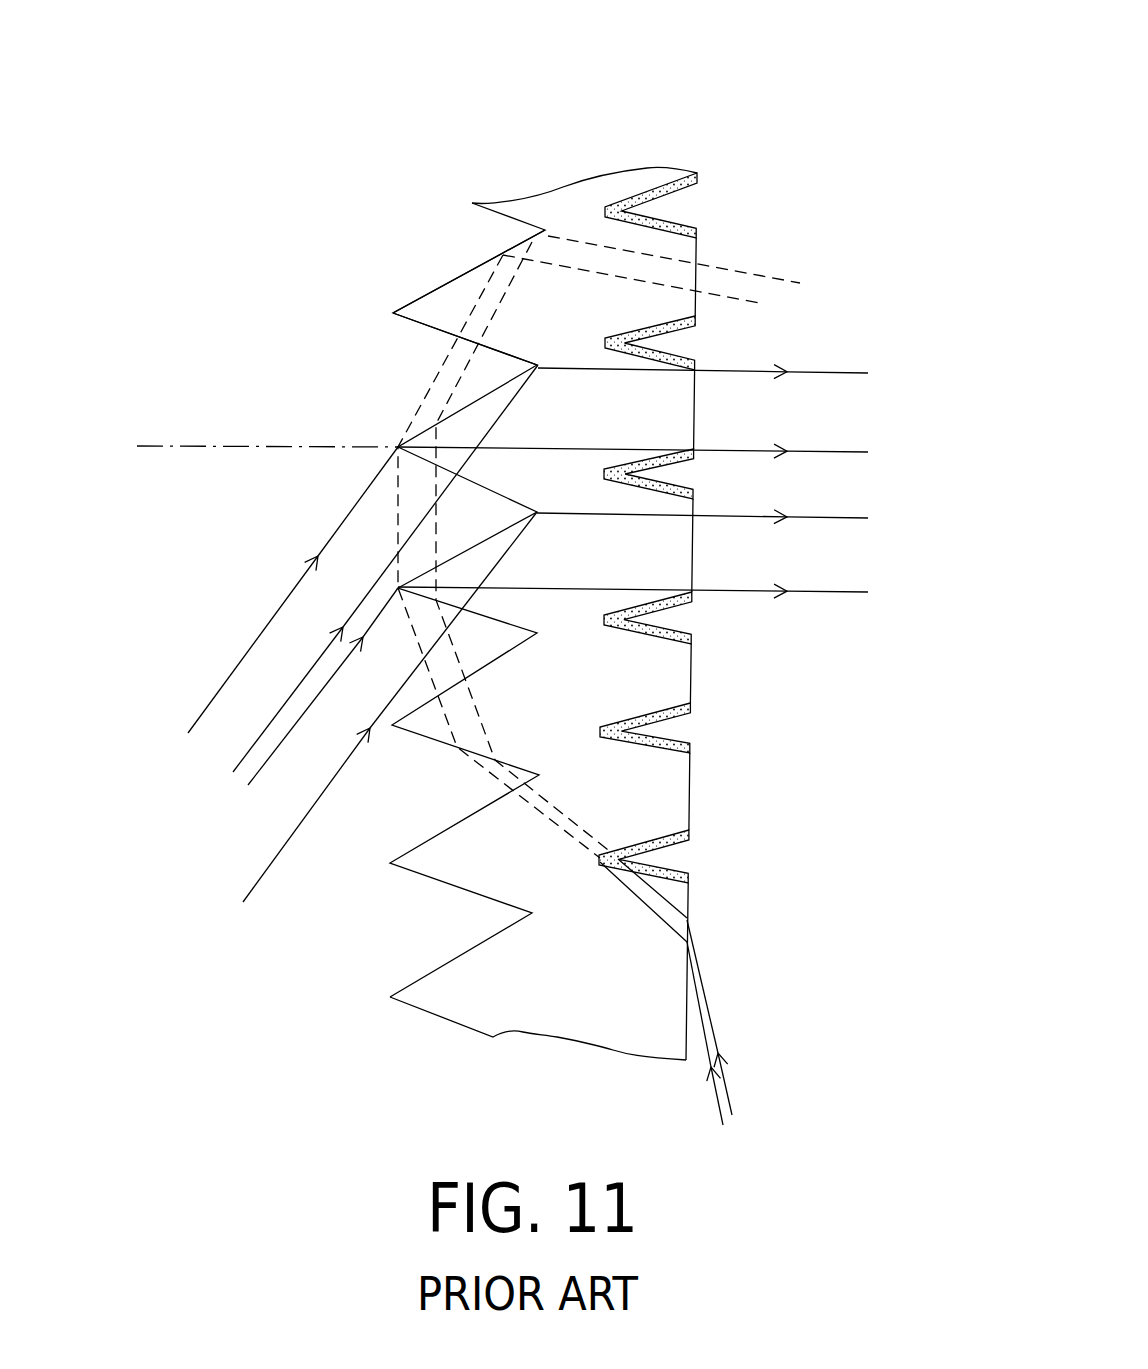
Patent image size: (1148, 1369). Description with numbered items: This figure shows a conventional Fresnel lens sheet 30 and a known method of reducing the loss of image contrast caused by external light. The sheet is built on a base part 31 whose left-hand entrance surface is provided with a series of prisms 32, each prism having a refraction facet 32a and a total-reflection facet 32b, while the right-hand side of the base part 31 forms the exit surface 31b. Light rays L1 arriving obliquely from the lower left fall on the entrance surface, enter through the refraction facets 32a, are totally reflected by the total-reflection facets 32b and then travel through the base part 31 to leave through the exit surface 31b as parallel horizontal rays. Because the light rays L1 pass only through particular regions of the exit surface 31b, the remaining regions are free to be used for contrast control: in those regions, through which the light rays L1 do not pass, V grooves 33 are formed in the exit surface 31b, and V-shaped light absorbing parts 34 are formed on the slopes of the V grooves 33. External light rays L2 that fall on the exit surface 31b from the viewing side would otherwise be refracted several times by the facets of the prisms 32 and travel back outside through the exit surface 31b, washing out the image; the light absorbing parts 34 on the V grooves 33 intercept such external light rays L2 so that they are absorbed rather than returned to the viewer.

The Fresnel lens sheet 30 is at (552, 533).
The base part 31 is at (546, 574).
The exit surface 31b is at (697, 278).
The prisms 32 is at (419, 572).
The refraction facet 32a is at (422, 324).
The total-reflection facet 32b is at (415, 300).
The V grooves 33 is at (657, 752).
The light absorbing parts 34 is at (680, 712).
The light rays L1 is at (284, 598).
The external light rays L2 is at (705, 967).